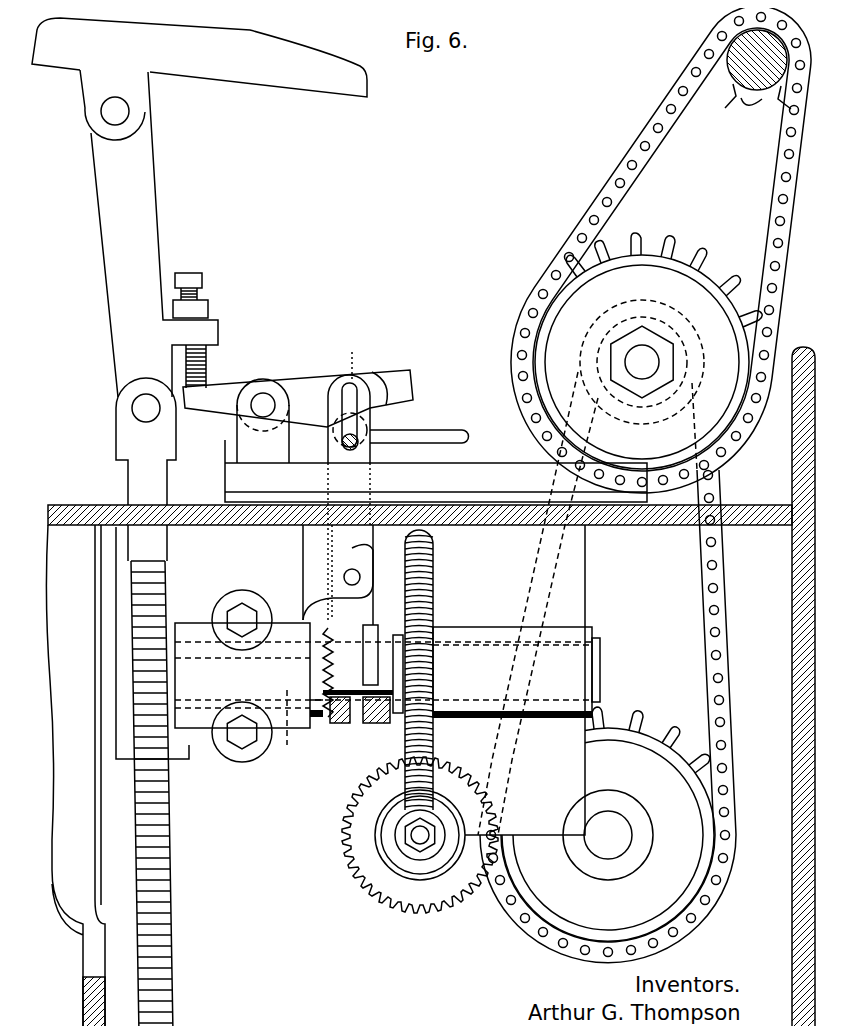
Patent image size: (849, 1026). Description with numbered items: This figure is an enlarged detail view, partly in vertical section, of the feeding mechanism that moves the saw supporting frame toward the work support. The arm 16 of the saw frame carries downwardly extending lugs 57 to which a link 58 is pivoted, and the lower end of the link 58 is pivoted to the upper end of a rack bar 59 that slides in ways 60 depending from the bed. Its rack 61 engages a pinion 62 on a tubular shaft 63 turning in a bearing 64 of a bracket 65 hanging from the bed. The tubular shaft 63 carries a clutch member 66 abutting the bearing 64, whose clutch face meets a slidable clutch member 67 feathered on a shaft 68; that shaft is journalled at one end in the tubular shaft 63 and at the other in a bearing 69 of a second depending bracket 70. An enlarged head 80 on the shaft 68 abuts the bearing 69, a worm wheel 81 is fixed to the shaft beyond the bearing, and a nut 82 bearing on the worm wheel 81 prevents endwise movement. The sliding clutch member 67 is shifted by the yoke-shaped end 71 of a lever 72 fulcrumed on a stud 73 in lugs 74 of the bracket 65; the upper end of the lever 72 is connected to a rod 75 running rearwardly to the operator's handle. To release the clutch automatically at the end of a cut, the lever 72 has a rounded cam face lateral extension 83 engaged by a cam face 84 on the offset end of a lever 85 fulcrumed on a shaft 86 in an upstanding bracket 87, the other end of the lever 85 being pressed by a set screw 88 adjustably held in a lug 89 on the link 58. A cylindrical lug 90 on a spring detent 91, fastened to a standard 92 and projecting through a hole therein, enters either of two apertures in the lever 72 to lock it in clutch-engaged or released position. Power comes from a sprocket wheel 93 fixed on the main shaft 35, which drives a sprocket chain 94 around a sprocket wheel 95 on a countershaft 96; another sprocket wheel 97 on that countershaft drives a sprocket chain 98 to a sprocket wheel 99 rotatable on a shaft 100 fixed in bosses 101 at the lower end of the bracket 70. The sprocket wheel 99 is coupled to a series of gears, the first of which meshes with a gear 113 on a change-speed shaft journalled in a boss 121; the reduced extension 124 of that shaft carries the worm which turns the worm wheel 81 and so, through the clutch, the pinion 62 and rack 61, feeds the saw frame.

The arm 16 is at (227, 48).
The main shaft 35 is at (730, 62).
The lugs 57 is at (145, 99).
The link 58 is at (145, 185).
The rack bar 59 is at (118, 435).
The ways 60 is at (181, 753).
The rack 61 is at (171, 832).
The pinion 62 is at (174, 657).
The tubular shaft 63 is at (255, 730).
The bearing 64 is at (285, 628).
The bracket 65 is at (294, 564).
The clutch member 66 is at (320, 727).
The slidable clutch member 67 is at (340, 725).
The shaft 68 is at (380, 698).
The bearing 69 is at (578, 655).
The bracket 70 is at (573, 603).
The yoke-shaped end 71 is at (368, 624).
The lever 72 is at (367, 562).
The stud 73 is at (360, 576).
The lugs 74 is at (343, 563).
The rod 75 is at (445, 429).
The enlarged head 80 is at (599, 674).
The worm wheel 81 is at (407, 738).
The nut 82 is at (400, 660).
The cam face lateral extension 83 is at (366, 385).
The cam face 84 is at (388, 380).
The lever 85 is at (303, 386).
The shaft 86 is at (265, 395).
The bracket 87 is at (240, 437).
The set screw 88 is at (208, 366).
The lug 89 is at (218, 324).
The cylindrical lug 90 is at (345, 356).
The spring detent 91 is at (352, 418).
The standard 92 is at (358, 445).
The sprocket wheel 93 is at (745, 100).
The sprocket chain 94 is at (782, 148).
The sprocket wheel 95 is at (681, 258).
The countershaft 96 is at (638, 352).
The sprocket wheel 97 is at (628, 413).
The sprocket chain 98 is at (725, 617).
The sprocket wheel 99 is at (692, 848).
The shaft 100 is at (611, 850).
The bosses 101 is at (633, 812).
The gear 113 is at (428, 900).
The boss 121 is at (378, 858).
The reduced extension 124 is at (405, 835).